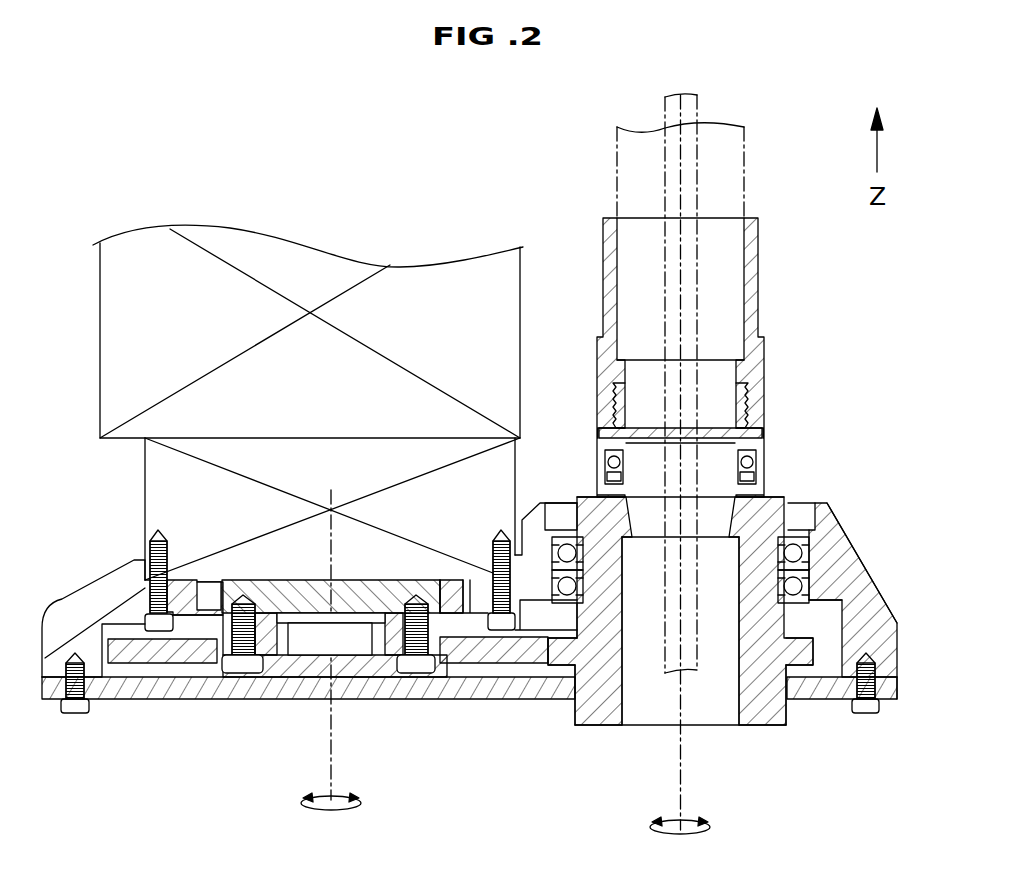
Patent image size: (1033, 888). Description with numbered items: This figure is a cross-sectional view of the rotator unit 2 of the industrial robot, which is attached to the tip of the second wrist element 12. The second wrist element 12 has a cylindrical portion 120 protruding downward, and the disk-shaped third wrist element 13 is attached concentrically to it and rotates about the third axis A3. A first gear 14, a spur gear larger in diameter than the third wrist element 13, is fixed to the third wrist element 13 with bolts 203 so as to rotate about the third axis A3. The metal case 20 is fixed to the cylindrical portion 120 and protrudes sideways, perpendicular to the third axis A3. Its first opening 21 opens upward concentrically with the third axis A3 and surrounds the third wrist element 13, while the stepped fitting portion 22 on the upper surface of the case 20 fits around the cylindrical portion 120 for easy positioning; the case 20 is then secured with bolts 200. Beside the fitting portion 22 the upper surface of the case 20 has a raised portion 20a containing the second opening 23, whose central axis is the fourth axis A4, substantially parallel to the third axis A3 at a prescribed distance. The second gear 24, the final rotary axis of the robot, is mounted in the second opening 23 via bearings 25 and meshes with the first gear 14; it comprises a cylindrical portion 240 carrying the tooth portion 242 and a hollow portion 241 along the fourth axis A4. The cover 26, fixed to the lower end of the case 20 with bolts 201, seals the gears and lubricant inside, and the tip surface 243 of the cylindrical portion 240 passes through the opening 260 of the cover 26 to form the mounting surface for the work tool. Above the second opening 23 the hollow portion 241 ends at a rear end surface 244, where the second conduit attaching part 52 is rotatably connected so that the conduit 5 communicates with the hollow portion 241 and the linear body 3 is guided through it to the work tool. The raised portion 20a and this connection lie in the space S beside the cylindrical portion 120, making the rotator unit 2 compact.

The rotator unit 2 is at (890, 478).
The linear body 3 is at (700, 125).
The conduit 5 is at (617, 150).
The second wrist element 12 is at (100, 297).
The cylindrical portion 120 is at (148, 482).
The third wrist element 13 is at (300, 657).
The first gear 14 is at (133, 662).
The case 20 is at (897, 655).
The raised portion 20a is at (847, 537).
The first opening 21 is at (468, 596).
The fitting portion 22 is at (140, 565).
The second opening 23 is at (803, 605).
The second gear 24 is at (603, 735).
The bearings 25 is at (555, 603).
The cover 26 is at (175, 700).
The second conduit attaching part 52 is at (768, 392).
The bolts 200 is at (145, 597).
The bolts 201 is at (76, 714).
The bolts 203 is at (232, 672).
The cylindrical portion 240 is at (790, 713).
The hollow portion 241 is at (645, 727).
The tooth portion 242 is at (820, 658).
The tip surface 243 is at (767, 727).
The rear end surface 244 is at (772, 493).
The opening 260 is at (578, 622).
The space S is at (561, 432).
The third axis A3 is at (327, 770).
The fourth axis A4 is at (688, 800).